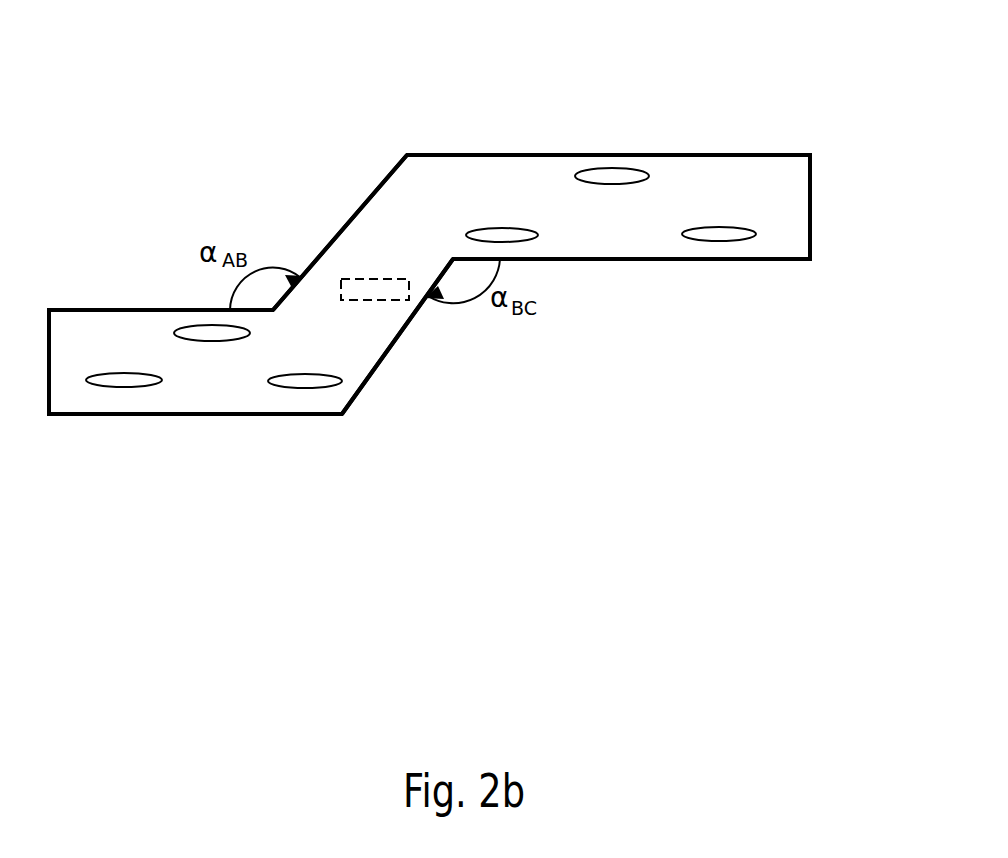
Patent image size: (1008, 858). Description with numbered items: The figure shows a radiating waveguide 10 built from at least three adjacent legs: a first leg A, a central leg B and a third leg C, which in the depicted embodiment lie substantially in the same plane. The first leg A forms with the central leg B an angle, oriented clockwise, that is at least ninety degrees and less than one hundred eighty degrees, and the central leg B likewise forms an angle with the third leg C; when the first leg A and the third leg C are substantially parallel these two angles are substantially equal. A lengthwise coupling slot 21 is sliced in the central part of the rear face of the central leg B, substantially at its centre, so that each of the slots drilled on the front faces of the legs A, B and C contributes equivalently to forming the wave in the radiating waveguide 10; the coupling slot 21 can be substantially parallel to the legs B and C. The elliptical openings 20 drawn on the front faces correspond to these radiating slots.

The radiating waveguide 10 is at (775, 155).
The opening / mounting hole 20 is at (612, 169).
The coupling slot 21 is at (378, 278).
The first leg A is at (76, 310).
The central leg B is at (408, 325).
The third leg C is at (697, 153).